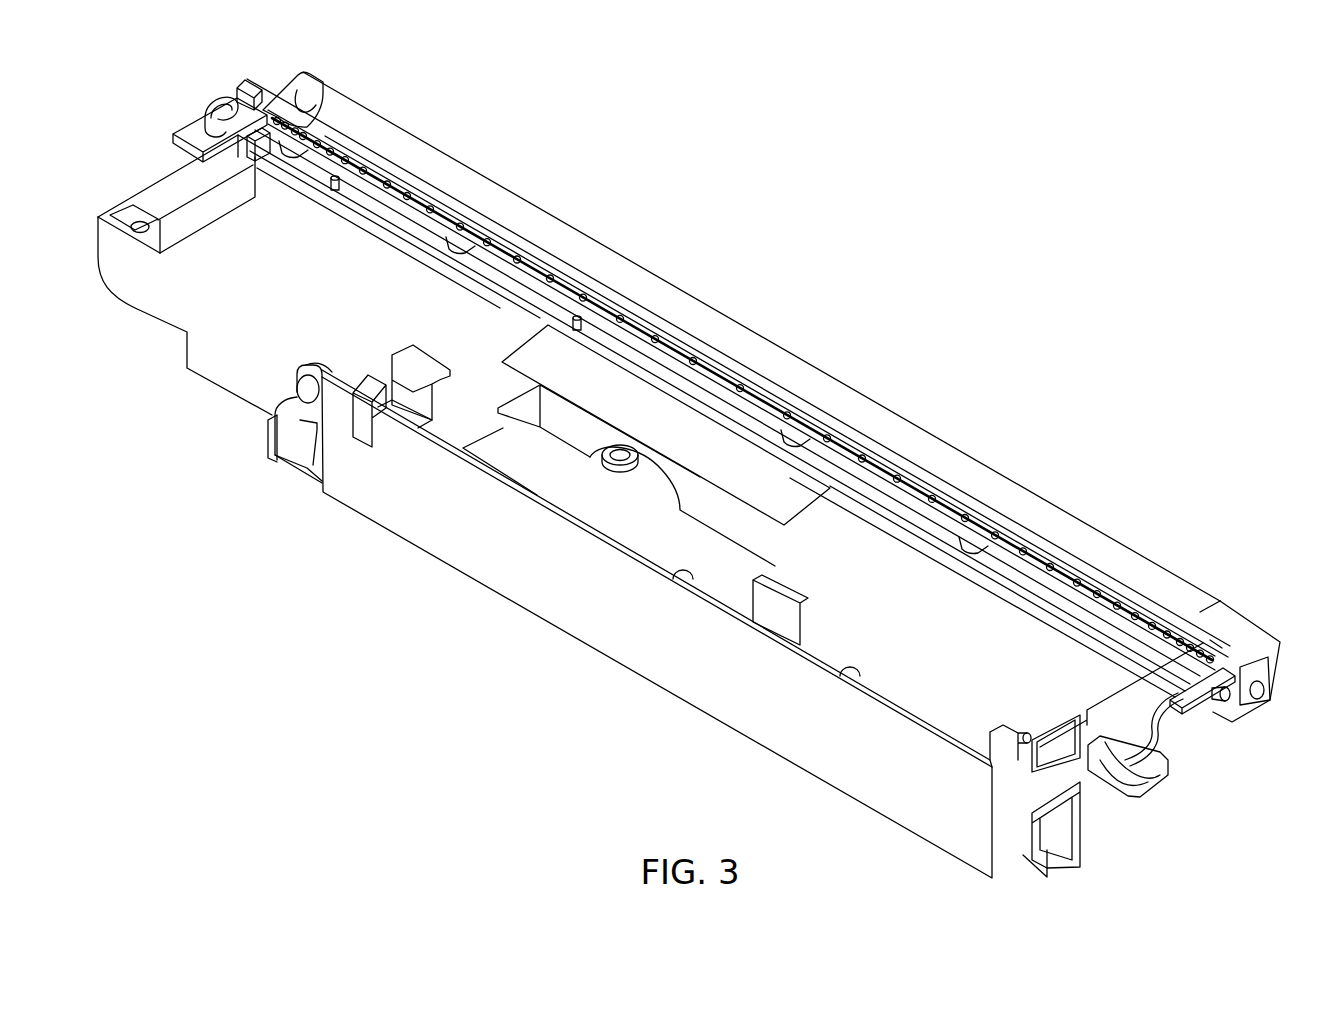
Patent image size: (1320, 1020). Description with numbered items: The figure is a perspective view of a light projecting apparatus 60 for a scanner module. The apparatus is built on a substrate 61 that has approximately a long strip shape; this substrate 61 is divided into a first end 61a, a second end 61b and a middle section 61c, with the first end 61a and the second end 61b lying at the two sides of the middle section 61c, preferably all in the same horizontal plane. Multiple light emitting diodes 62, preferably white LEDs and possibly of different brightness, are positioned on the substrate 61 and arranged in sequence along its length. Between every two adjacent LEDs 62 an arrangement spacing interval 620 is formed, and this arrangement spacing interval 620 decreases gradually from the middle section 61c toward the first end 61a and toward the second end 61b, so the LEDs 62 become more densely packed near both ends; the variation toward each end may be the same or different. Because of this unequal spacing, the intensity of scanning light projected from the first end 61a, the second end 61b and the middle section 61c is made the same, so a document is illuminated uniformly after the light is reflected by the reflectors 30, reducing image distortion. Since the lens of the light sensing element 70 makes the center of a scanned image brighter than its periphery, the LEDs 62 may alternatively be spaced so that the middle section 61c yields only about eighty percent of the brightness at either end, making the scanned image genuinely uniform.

The reflectors 30 is at (443, 178).
The light projecting apparatus 60 is at (741, 394).
The substrate 61 is at (766, 354).
The first end 61a is at (1210, 647).
The second end 61b is at (305, 76).
The middle section 61c is at (722, 373).
The light emitting diodes 62 is at (1148, 600).
The arrangement spacing interval 620 is at (910, 484).
The light sensing element 70 is at (618, 473).